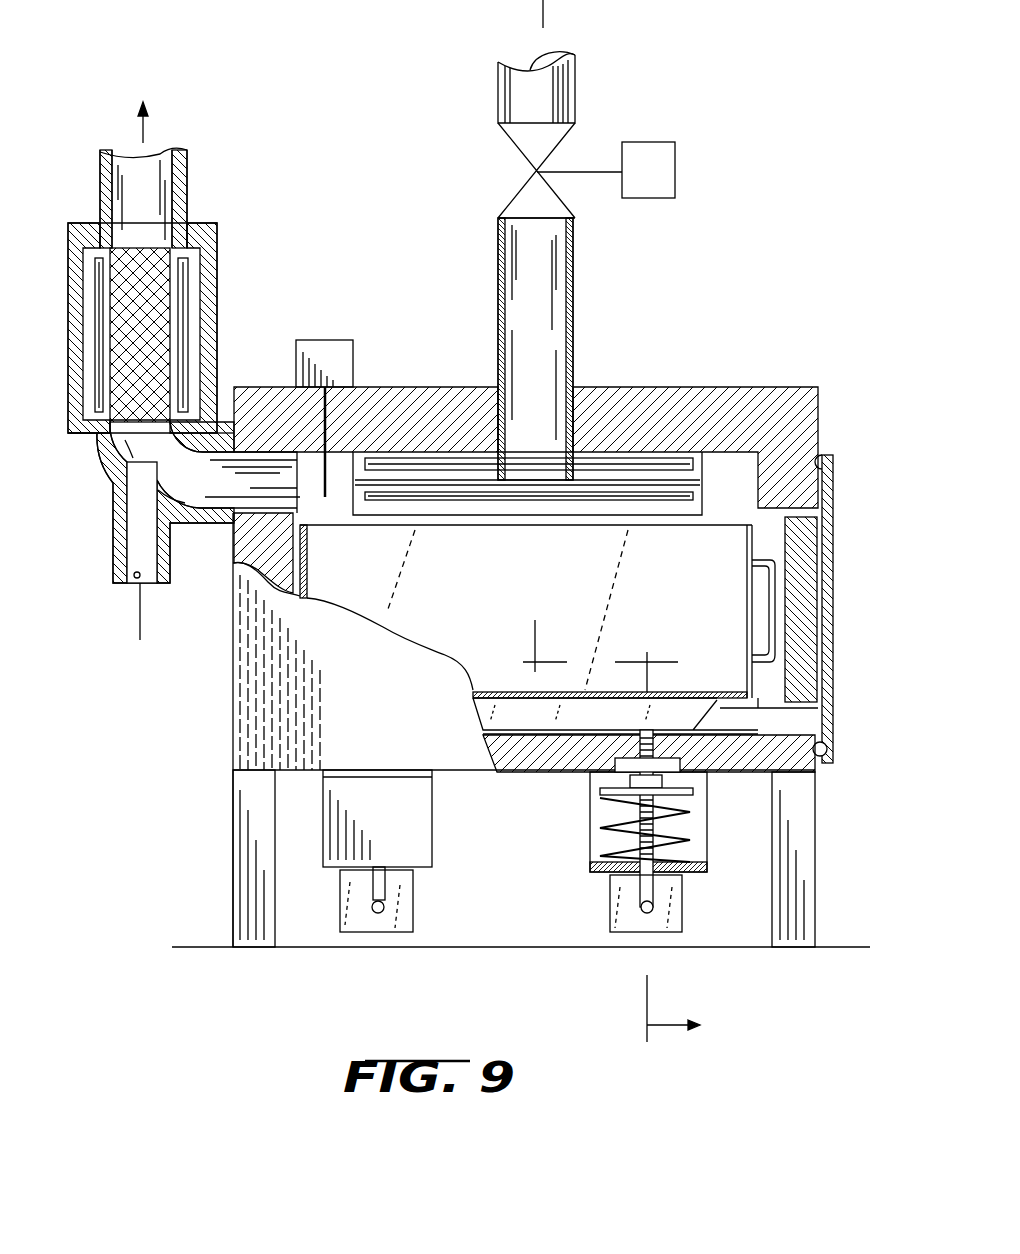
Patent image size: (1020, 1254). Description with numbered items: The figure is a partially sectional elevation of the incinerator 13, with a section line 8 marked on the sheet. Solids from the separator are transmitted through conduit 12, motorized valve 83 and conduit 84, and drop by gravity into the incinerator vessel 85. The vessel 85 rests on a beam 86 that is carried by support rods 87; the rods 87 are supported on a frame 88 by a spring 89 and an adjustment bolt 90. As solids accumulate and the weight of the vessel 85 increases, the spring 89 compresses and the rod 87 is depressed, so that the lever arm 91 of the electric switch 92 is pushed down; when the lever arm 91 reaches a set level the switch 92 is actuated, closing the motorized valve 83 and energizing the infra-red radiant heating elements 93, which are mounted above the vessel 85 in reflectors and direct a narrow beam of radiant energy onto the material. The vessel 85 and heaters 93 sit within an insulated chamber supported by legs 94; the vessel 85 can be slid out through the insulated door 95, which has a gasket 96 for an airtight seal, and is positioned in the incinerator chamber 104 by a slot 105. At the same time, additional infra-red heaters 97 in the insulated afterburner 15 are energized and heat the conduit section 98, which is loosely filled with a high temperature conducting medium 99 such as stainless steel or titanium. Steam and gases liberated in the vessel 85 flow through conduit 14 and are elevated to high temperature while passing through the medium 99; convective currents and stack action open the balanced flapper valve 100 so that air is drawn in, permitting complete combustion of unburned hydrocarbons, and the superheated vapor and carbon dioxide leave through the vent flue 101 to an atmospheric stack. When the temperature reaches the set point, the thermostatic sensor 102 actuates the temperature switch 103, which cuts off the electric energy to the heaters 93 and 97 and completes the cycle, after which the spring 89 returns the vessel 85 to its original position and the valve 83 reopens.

The section line 8- 8 is at (681, 1008).
The conduit 12 is at (567, 92).
The incinerator 13 is at (826, 385).
The conduit 14 is at (205, 527).
The insulated afterburner 15 is at (218, 324).
The motorized valve 83 is at (661, 183).
The conduit 84 is at (558, 305).
The incinerator vessel 85 is at (449, 628).
The beam 86 is at (720, 713).
The support rods 87 is at (657, 805).
The frame 88 is at (699, 845).
The spring 89 is at (622, 843).
The adjustment bolt 90 is at (630, 782).
The lever arm 91 is at (383, 906).
The electric switch 92 is at (406, 925).
The infra-red radiant heating elements 93 is at (693, 497).
The legs 94 is at (248, 834).
The insulated door 95 is at (831, 587).
The gasket 96 is at (828, 750).
The infra-red heaters 97 is at (98, 274).
The conduit section 98 is at (200, 226).
The high temperature conducting medium 99 is at (125, 331).
The balanced flapper valve 100 is at (137, 578).
The vent flue 101 is at (157, 182).
The thermostatic sensor 102 is at (321, 490).
The temperature switch 103 is at (332, 338).
The incinerator chamber 104 is at (776, 678).
The slot 105 is at (797, 727).